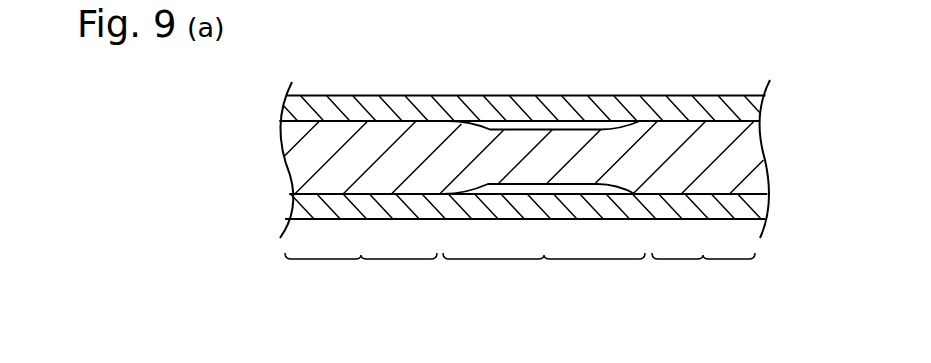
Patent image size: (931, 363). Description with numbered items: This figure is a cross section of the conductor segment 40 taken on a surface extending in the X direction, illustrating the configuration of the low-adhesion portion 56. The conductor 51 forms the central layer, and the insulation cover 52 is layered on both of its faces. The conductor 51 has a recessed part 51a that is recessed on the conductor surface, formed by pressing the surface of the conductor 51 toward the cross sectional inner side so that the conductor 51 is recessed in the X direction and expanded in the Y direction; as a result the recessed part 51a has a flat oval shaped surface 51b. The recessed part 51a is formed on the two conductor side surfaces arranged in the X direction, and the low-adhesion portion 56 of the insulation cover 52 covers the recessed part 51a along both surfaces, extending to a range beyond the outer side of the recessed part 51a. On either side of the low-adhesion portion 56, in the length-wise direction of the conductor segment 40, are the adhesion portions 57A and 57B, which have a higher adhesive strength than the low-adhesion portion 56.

The conductor segment 40 is at (738, 67).
The conductor 51 is at (378, 120).
The recessed part 51a is at (480, 128).
The flat oval shaped surface 51b is at (562, 130).
The insulation cover 52 is at (420, 95).
The low-adhesion portion 56 is at (544, 275).
The adhesion portion 57A is at (361, 275).
The adhesion portion 57B is at (703, 275).